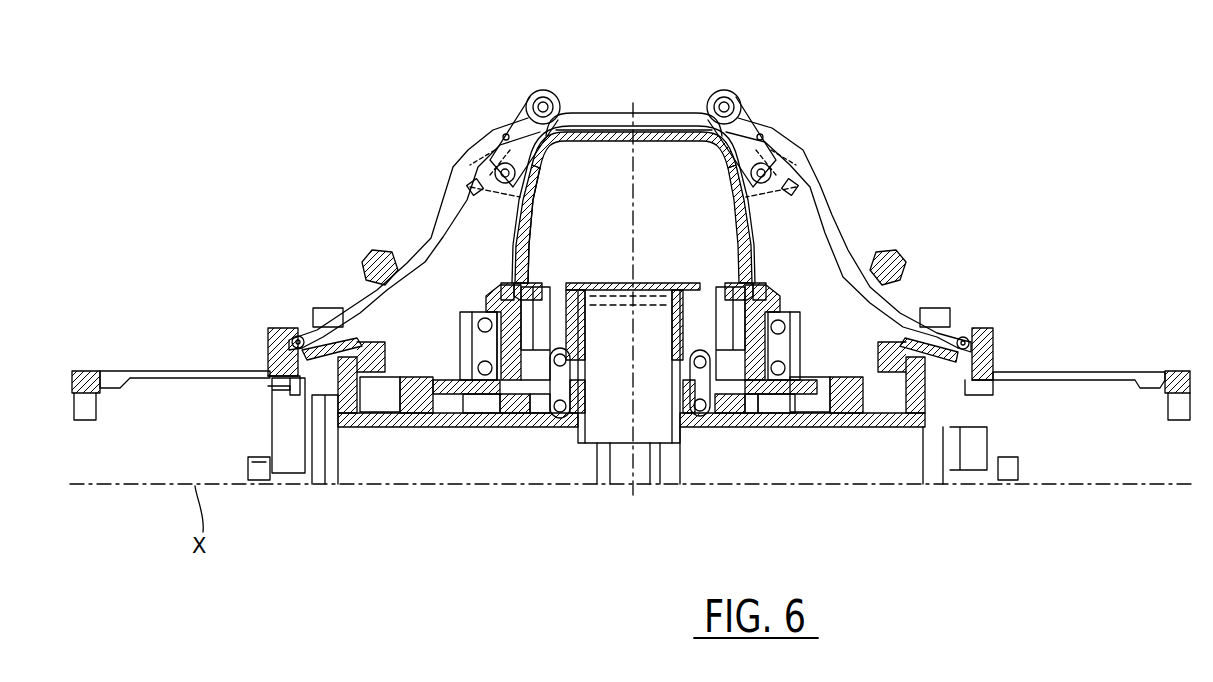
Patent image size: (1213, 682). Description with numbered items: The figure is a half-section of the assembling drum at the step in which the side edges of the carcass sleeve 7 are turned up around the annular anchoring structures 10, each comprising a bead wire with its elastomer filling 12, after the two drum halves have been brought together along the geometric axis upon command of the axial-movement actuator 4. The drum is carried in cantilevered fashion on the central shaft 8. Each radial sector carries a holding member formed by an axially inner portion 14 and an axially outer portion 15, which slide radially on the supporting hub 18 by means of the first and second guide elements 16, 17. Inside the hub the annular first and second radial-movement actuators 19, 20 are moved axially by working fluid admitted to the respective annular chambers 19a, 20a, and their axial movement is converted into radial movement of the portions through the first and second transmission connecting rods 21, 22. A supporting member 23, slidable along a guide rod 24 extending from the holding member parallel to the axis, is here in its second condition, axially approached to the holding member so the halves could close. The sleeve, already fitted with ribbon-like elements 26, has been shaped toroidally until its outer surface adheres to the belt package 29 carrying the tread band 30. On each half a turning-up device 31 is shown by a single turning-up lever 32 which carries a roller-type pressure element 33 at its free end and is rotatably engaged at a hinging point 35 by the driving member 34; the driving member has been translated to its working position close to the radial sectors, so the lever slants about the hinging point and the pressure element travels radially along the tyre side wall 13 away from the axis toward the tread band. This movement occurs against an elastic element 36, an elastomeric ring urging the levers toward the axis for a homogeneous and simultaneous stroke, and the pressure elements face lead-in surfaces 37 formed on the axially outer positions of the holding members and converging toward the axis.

The axial-movement actuator 4 is at (618, 470).
The carcass sleeve 7 is at (542, 178).
The central shaft 8 is at (1100, 465).
The annular anchoring structure to beads 10 is at (536, 251).
The elastomer filling 12 is at (531, 241).
The tyre side wall 13 is at (514, 197).
The axially inner portion 14 is at (542, 290).
The axially outer portion 15 is at (758, 284).
The first guide element 16 is at (582, 380).
The second guide element 17 is at (515, 430).
The supporting hub 18 is at (445, 430).
The first radial-movement actuator 19 is at (552, 430).
The annular chamber 19a is at (478, 430).
The second radial-movement actuator 20 is at (400, 430).
The annular chamber 20a is at (362, 430).
The first transmission connecting rod 21 is at (580, 430).
The second transmission connecting rod 22 is at (468, 346).
The supporting member 23 is at (617, 282).
The guide rod 24 is at (615, 300).
The ribbon-like element 26 is at (546, 139).
The belt package 29 is at (660, 130).
The tread band 30 is at (608, 112).
The turning-up device 31 is at (922, 272).
The turning-up lever 32 is at (432, 236).
The pressure element 33 is at (546, 91).
The driving member 34 is at (268, 333).
The hinging point 35 is at (294, 337).
The elastic element 36 is at (370, 262).
The lead-in surface 37 is at (490, 300).